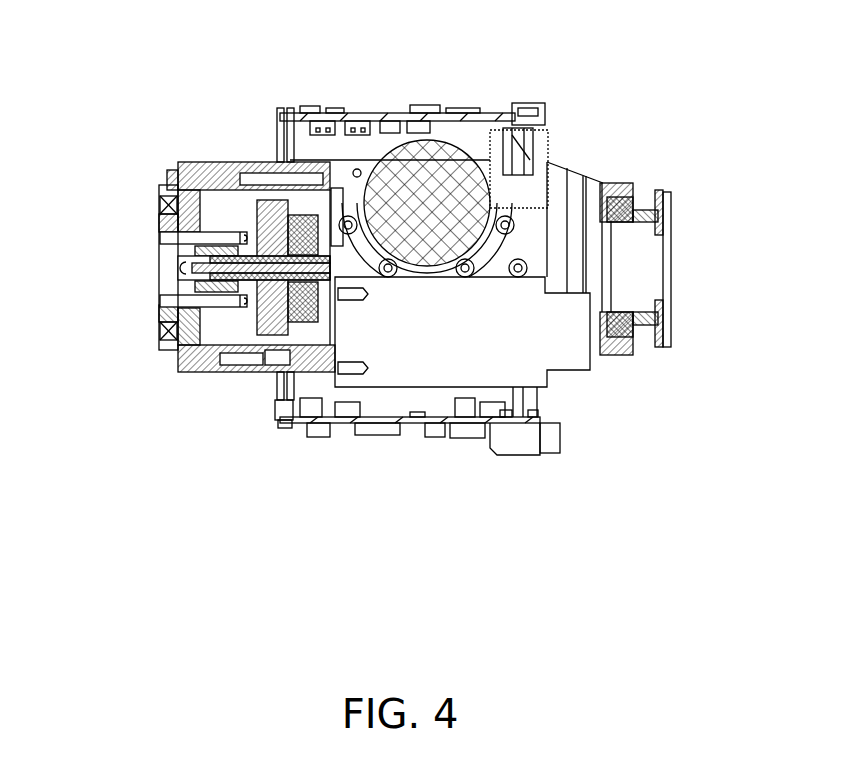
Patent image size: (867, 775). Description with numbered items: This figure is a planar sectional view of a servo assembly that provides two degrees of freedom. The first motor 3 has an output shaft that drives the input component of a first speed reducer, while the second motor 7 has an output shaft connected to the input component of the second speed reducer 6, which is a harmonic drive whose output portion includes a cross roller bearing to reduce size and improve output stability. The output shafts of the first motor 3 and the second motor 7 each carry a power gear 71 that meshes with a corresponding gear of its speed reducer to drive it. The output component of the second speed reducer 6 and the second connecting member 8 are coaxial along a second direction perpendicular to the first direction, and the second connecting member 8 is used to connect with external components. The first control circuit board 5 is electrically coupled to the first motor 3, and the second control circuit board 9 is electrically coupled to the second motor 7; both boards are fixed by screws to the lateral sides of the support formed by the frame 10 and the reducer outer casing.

The first motor 3 is at (465, 130).
The first control circuit board 5 is at (356, 115).
The second speed reducer 6 is at (181, 308).
The second motor 7 is at (563, 362).
The power gear 71 is at (266, 372).
The second connecting member 8 is at (665, 260).
The second control circuit board 9 is at (342, 422).
The frame 10 is at (575, 170).